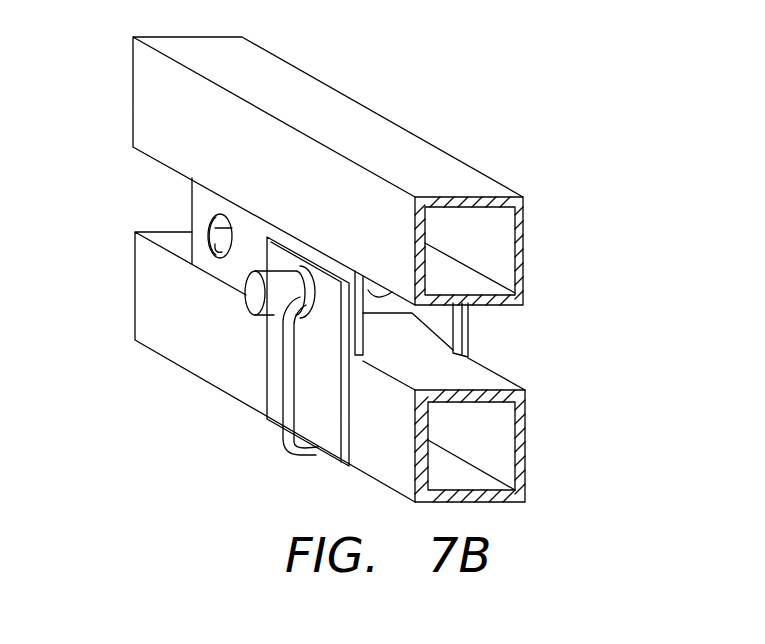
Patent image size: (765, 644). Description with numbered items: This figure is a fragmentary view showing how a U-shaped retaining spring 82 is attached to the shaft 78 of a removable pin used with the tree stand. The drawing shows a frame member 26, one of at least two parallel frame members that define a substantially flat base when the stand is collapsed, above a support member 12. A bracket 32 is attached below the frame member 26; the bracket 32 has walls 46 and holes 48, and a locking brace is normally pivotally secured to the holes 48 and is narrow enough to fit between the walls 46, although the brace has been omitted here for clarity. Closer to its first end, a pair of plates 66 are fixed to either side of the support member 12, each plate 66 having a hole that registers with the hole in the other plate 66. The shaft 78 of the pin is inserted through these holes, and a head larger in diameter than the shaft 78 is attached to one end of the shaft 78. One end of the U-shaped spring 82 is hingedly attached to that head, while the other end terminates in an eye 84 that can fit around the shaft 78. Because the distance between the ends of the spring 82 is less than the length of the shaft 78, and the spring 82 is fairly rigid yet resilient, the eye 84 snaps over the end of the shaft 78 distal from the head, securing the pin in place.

The support member 12 is at (528, 437).
The frame member 26 is at (408, 128).
The bracket 32 is at (207, 208).
The walls 46 is at (365, 352).
The holes 48 is at (218, 247).
The plates 66 is at (472, 330).
The shaft 78 is at (388, 292).
The U-shaped retaining spring 82 is at (285, 447).
The eye 84 is at (267, 322).